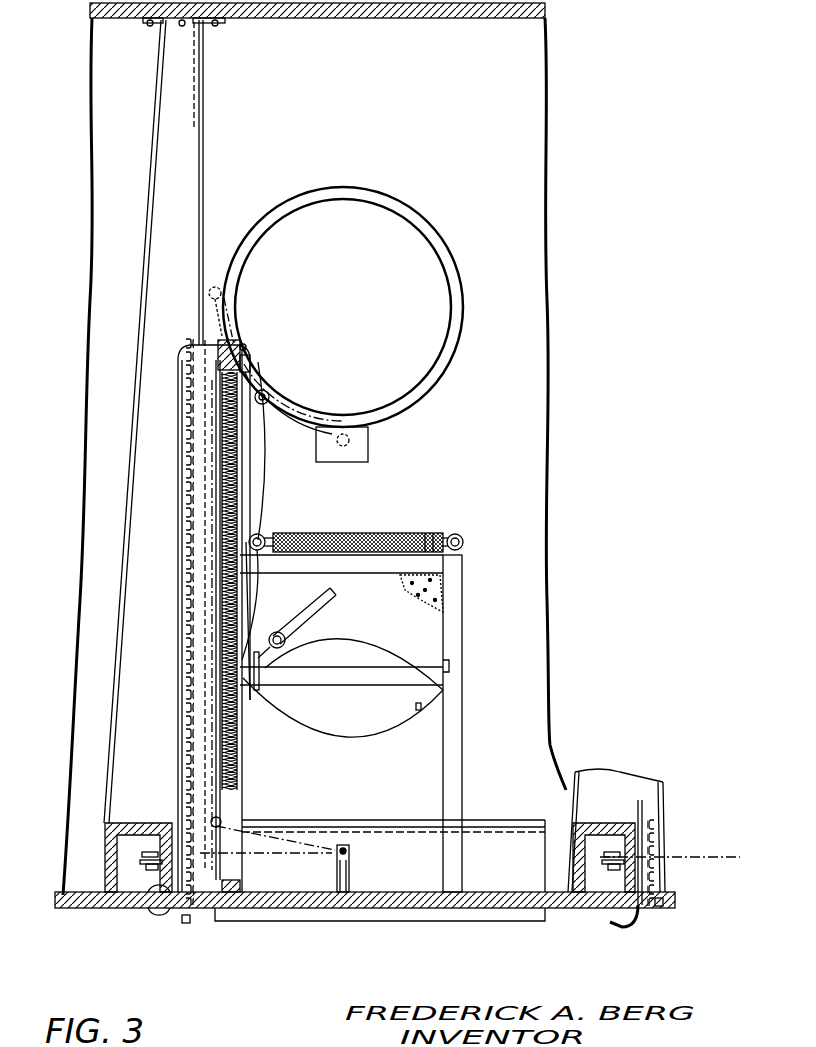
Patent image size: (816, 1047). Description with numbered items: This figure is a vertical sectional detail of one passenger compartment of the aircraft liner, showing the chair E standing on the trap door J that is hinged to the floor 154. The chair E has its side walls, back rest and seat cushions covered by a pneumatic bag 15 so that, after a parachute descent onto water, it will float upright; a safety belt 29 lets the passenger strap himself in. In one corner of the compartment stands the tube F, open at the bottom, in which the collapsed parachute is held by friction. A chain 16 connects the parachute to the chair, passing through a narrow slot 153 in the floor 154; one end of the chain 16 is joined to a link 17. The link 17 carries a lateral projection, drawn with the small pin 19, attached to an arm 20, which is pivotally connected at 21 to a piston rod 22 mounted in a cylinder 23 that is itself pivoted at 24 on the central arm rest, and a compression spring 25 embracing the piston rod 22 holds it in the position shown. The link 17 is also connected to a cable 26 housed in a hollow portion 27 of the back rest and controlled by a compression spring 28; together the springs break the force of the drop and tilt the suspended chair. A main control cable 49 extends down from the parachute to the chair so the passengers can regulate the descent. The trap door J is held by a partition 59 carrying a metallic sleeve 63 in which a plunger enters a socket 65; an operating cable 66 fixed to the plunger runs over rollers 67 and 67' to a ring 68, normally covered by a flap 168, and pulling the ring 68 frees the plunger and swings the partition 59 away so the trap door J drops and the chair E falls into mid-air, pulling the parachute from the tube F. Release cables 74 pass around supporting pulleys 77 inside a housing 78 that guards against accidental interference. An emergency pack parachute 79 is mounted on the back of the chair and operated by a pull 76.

The pneumatic bag 15 is at (263, 498).
The chain 16 is at (190, 735).
The link 17 is at (252, 360).
The pivot pin 19 is at (246, 346).
The arm 20 is at (250, 425).
The pivotal connection 21 is at (259, 550).
The piston rod 22 is at (264, 537).
The cylinder 23 is at (330, 531).
The pivotal mounting 24 is at (460, 535).
The compression spring 25 is at (378, 533).
The cable 26 is at (232, 455).
The hollow portion 27 is at (240, 738).
The compression spring 28 is at (236, 775).
The safety belt 29 is at (332, 597).
The main control cable 49 is at (186, 688).
The partition 59 is at (393, 856).
The metallic sleeve 63 is at (350, 851).
The socket 65 is at (341, 892).
The operating cable 66 is at (290, 840).
The roller 67 is at (245, 808).
The roller 67' is at (252, 313).
The ring 68 is at (350, 440).
The cable 74 is at (273, 855).
The pull 76 is at (268, 378).
The supporting pulley 77 is at (152, 852).
The housing 78 is at (125, 823).
The emergency pack parachute 79 is at (203, 527).
The slot 153 is at (655, 905).
The floor 154 is at (135, 908).
The flap 168 is at (355, 452).
The chair E is at (456, 722).
The tube F is at (137, 560).
The trap door J is at (553, 910).